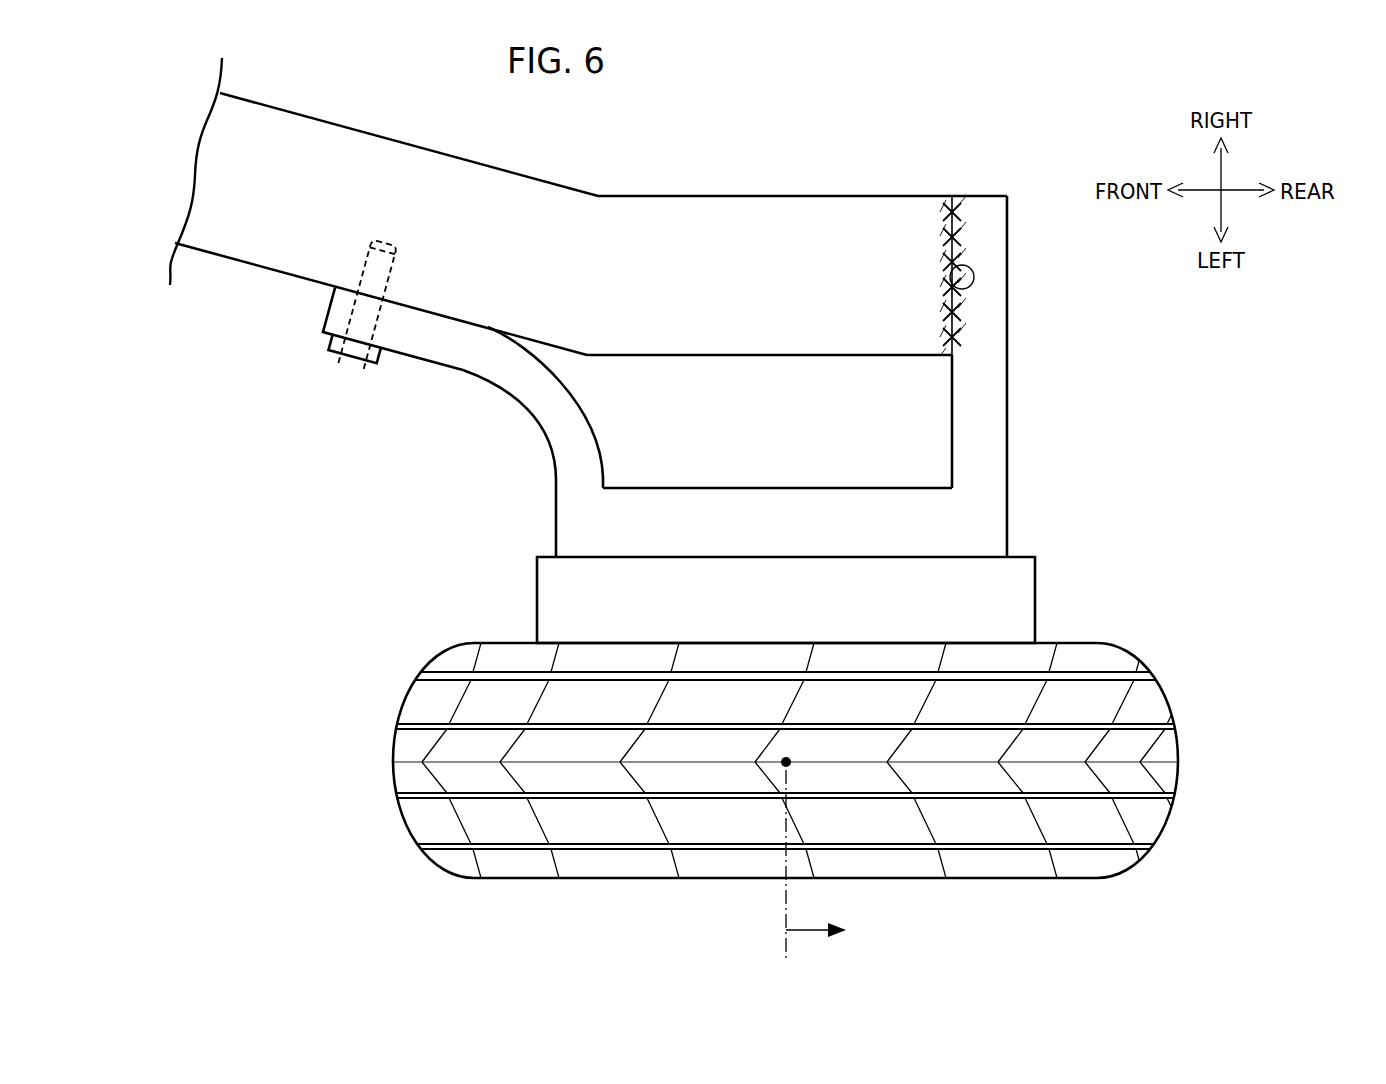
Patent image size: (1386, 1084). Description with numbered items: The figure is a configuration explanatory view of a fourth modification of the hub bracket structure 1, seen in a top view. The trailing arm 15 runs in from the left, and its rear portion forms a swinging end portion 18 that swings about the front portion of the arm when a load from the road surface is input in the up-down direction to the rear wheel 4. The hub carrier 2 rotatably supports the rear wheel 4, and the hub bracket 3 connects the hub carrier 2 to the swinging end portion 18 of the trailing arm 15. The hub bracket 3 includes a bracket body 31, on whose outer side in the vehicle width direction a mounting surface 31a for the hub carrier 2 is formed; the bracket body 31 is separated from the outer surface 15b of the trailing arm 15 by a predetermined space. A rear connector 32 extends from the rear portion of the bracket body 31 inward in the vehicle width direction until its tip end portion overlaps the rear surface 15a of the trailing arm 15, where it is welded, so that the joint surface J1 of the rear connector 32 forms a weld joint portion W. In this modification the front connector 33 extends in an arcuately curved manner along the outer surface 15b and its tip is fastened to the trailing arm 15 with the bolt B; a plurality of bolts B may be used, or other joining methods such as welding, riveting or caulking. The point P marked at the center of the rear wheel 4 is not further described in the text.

The swinging end portion 18 is at (800, 162).
The trailing arm 15 is at (878, 195).
The rear surface 15a is at (955, 280).
The outer surface 15b is at (697, 355).
The weld joint portion W is at (978, 226).
The joint surface J1 is at (960, 323).
The hub bracket structure 1 is at (1115, 396).
The hub bracket 3 is at (875, 414).
The front connector 33 is at (547, 397).
The bracket body 31 is at (781, 488).
The mounting surface 31a is at (697, 557).
The rear connector 32 is at (972, 437).
The bolt B is at (351, 360).
The hub carrier 2 is at (1035, 602).
The rear wheel 4 is at (1167, 684).
The wheel center point P is at (783, 766).